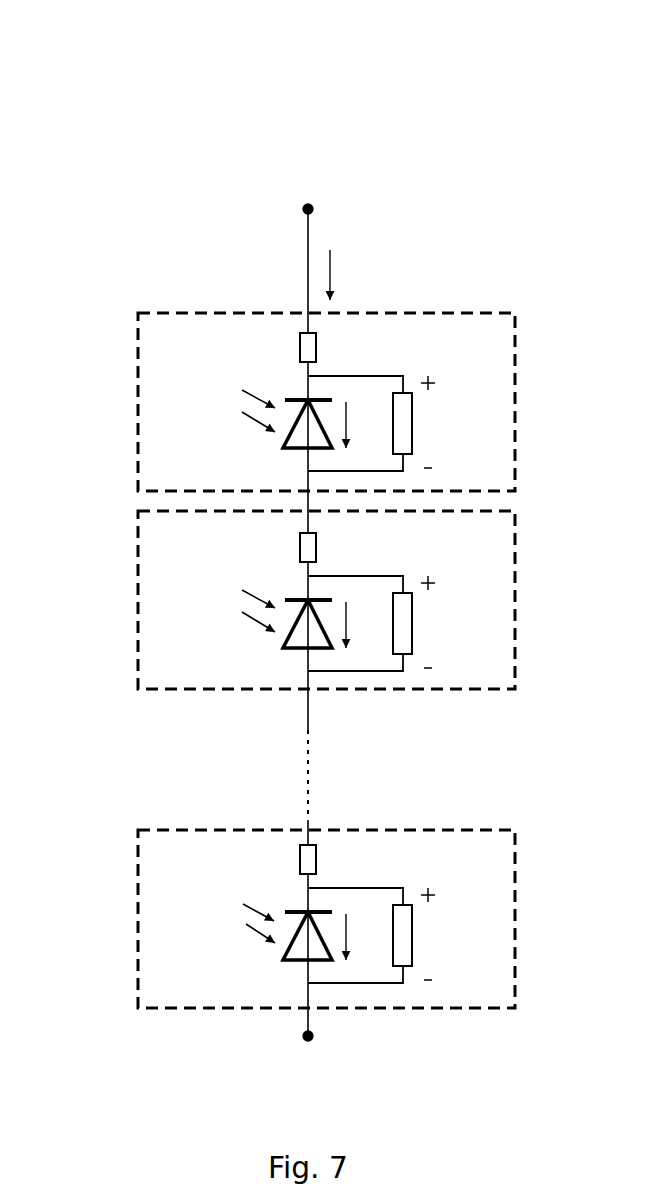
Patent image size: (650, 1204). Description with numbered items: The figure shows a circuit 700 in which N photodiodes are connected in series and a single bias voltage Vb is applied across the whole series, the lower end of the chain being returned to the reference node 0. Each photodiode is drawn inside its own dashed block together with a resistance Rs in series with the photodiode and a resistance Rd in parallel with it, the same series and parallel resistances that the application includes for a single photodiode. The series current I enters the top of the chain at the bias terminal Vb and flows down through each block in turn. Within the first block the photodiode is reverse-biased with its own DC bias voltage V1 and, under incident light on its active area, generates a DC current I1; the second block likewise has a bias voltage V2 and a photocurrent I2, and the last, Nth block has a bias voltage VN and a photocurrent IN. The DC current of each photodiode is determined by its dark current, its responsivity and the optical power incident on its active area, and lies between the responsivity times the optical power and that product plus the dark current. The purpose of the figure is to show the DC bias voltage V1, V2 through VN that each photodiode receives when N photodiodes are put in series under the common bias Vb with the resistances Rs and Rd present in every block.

The photovoltaic cell string equivalent circuit 700 is at (111, 89).
The series resistance Rs is at (287, 601).
The parallel resistance Rd is at (362, 659).
The bias voltage Vb is at (331, 218).
The ground terminal 0 is at (324, 1040).
The string current I is at (341, 273).
The DC current of photodiode one I1 is at (361, 422).
The DC current of photodiode two I2 is at (361, 622).
The DC current of photodiode N IN is at (361, 934).
The DC bias voltage of photodiode one V1 is at (432, 422).
The DC bias voltage of photodiode two V2 is at (432, 622).
The DC bias voltage of photodiode N VN is at (433, 934).